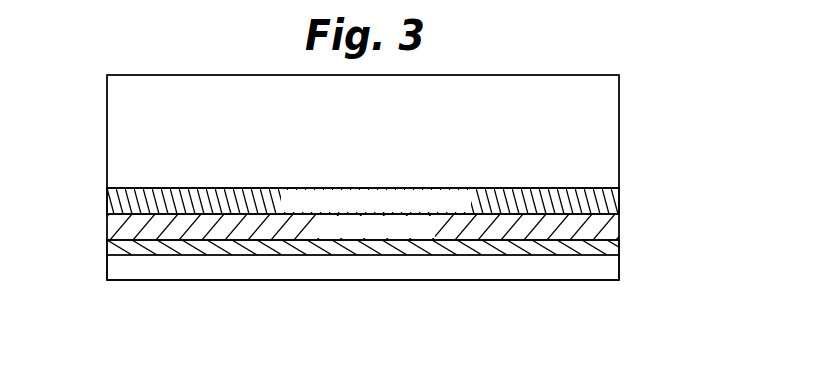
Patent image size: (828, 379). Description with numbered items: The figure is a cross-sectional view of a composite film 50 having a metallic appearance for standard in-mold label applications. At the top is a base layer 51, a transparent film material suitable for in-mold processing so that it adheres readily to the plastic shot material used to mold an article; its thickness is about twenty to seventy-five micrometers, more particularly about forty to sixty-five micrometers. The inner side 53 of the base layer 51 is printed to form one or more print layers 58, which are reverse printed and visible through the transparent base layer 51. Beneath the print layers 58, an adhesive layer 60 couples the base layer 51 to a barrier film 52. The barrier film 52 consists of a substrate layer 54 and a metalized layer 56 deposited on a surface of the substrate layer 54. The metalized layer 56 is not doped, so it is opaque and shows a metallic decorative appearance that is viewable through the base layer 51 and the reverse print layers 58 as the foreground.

The composite film 50 is at (630, 60).
The base layer 51 is at (603, 138).
The print layer 58 is at (608, 200).
The inner side 53 is at (120, 192).
The adhesive layer 60 is at (107, 222).
The metalized layer 56 is at (107, 247).
The substrate layer 54 is at (122, 269).
The barrier film 52 is at (627, 235).